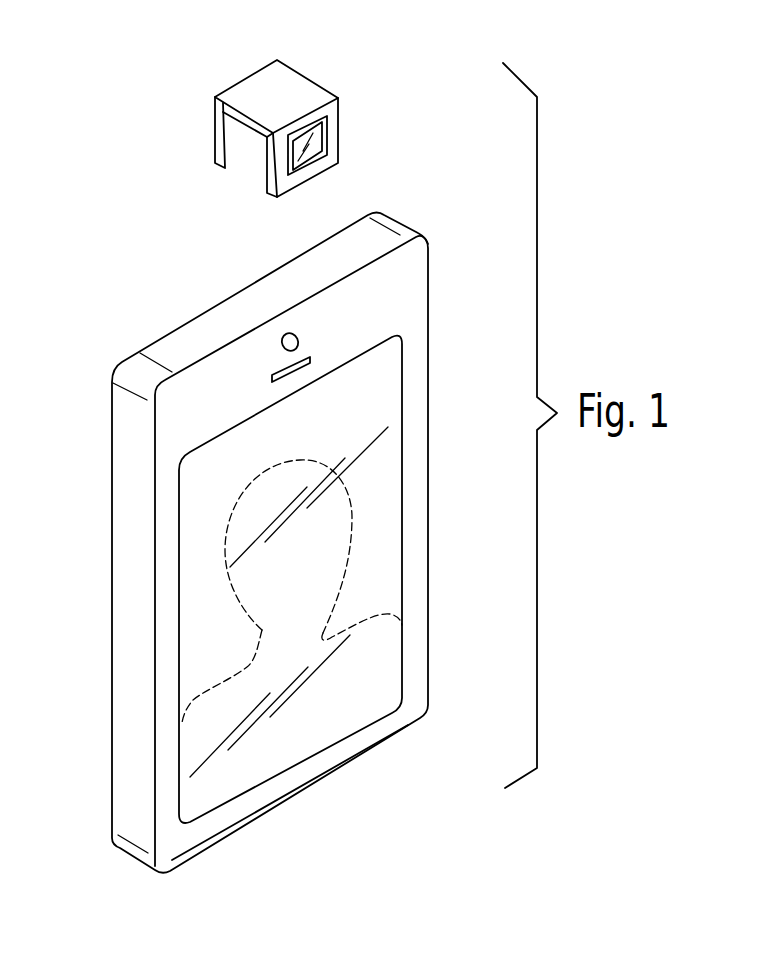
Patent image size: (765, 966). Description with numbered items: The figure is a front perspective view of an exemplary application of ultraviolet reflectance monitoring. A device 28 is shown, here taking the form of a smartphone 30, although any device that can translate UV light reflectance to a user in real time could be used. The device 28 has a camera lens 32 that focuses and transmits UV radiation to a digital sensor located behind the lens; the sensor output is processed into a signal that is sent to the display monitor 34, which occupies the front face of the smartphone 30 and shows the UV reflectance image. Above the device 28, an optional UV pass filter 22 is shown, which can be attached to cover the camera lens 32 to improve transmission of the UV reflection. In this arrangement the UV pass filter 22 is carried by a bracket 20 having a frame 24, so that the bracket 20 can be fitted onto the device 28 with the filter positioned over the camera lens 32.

The bracket 20 is at (318, 76).
The UV pass filter 22 is at (317, 145).
The frame 24 is at (253, 90).
The device 28 is at (110, 503).
The smartphone 30 is at (127, 628).
The camera lens 32 is at (290, 333).
The display monitor 34 is at (332, 518).